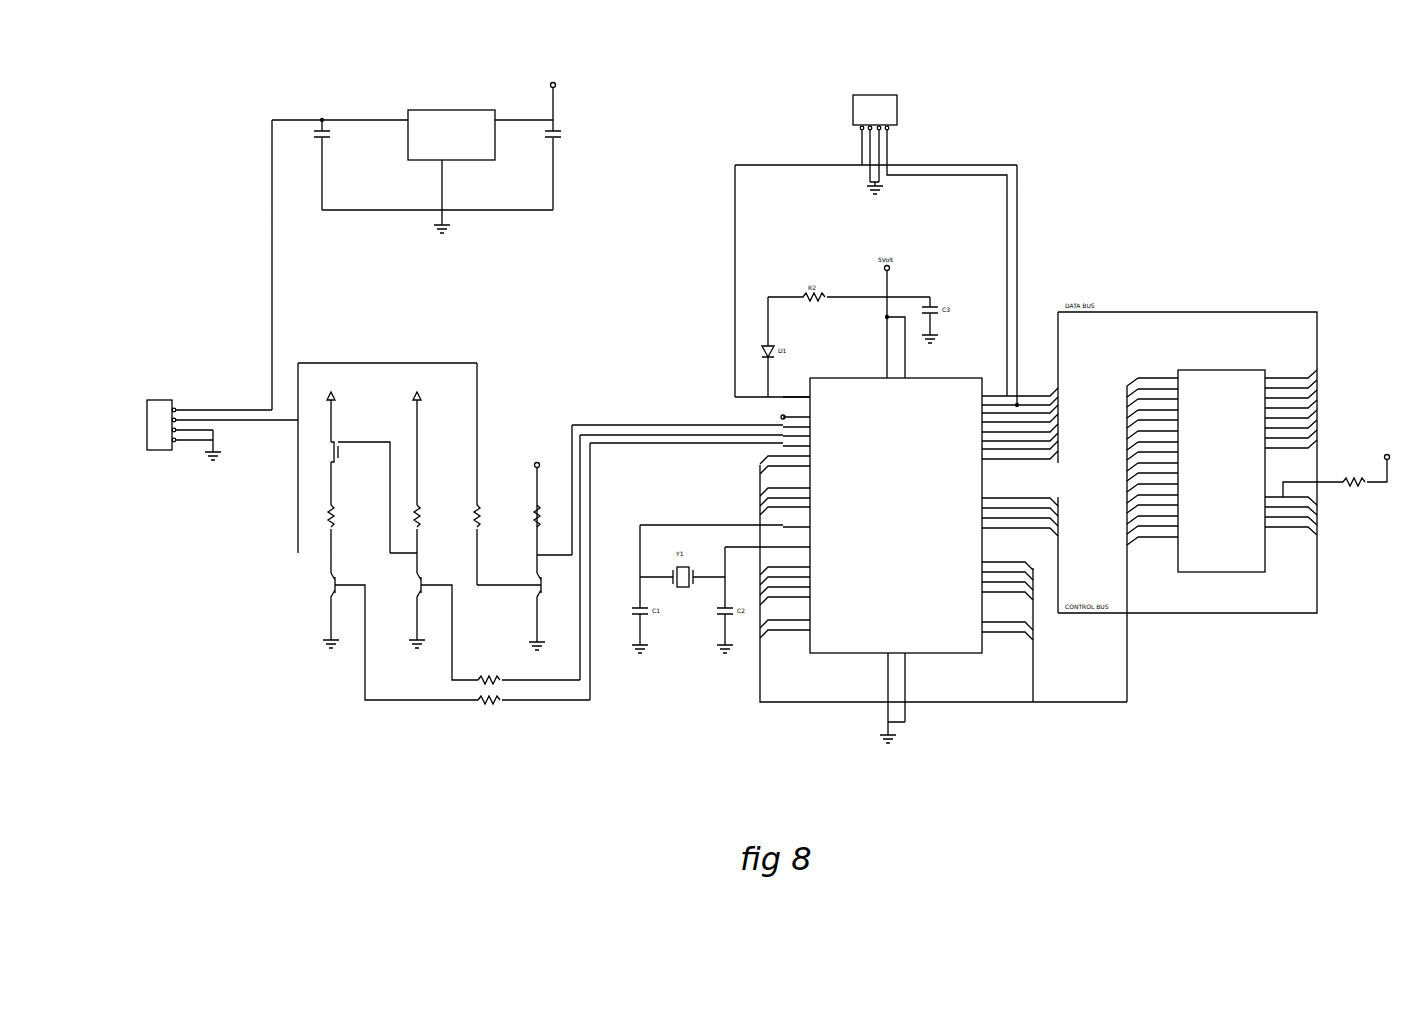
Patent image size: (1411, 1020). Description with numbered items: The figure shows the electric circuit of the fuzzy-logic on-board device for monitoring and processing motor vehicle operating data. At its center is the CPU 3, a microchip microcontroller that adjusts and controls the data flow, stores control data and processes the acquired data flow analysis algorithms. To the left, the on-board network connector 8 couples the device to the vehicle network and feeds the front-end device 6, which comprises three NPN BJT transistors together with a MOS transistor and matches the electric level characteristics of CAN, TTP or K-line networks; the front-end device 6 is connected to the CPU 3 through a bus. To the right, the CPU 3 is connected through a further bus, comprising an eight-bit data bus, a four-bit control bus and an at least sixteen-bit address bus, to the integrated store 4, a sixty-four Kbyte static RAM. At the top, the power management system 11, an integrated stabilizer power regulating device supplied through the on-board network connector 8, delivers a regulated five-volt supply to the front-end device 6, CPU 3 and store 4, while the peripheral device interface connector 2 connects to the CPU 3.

The peripheral device interface connector 2 is at (902, 103).
The CPU 3 is at (948, 657).
The integrated store 4 is at (1214, 366).
The front-end device 6 is at (307, 589).
The on-board network connector 8 is at (172, 397).
The power management system 11 is at (483, 168).